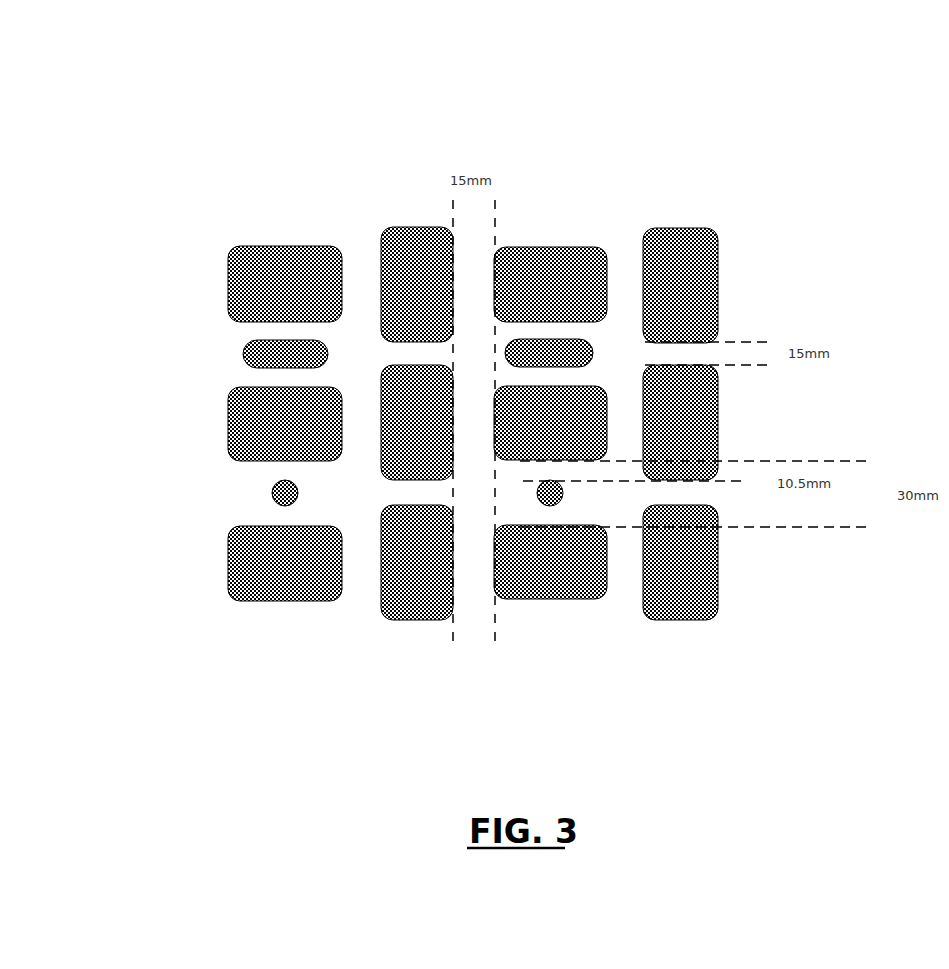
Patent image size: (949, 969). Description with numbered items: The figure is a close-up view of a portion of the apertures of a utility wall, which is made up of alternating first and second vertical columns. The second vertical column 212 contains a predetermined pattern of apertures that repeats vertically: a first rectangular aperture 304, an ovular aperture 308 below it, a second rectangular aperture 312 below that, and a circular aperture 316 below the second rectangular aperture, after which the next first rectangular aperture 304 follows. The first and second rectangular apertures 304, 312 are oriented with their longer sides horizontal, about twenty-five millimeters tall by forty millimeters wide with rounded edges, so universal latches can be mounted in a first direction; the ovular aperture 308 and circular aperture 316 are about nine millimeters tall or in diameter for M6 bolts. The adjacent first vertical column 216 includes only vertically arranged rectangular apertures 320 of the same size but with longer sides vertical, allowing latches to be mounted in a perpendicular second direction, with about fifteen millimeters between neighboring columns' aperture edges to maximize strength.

The second vertical column 212 is at (280, 203).
The first vertical column 216 is at (417, 165).
The first rectangular aperture 304 is at (228, 289).
The ovular aperture 308 is at (243, 355).
The second rectangular aperture 312 is at (228, 418).
The circular aperture 316 is at (272, 493).
The vertically arranged rectangular apertures 320 is at (422, 227).